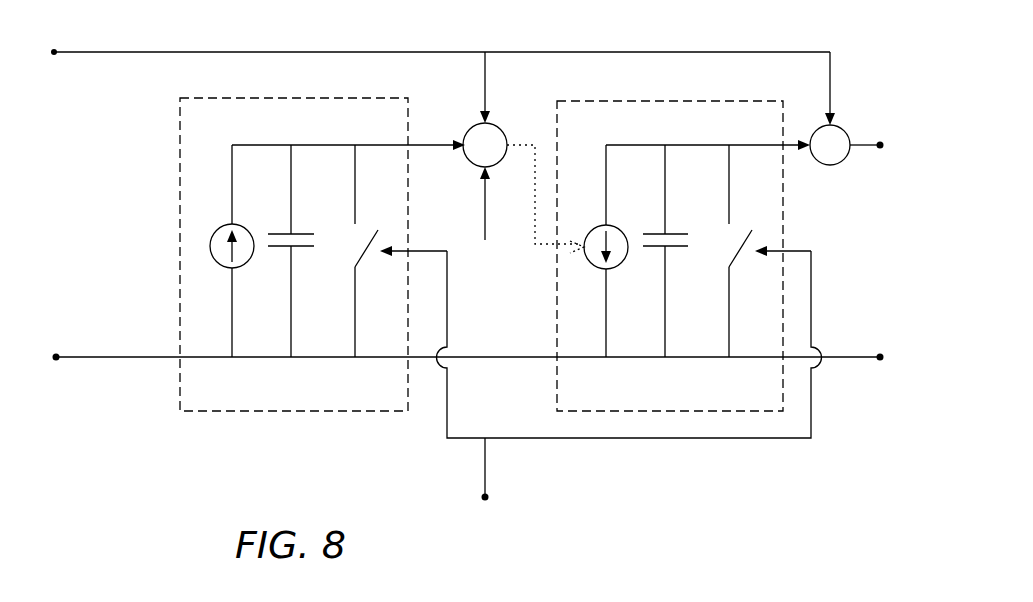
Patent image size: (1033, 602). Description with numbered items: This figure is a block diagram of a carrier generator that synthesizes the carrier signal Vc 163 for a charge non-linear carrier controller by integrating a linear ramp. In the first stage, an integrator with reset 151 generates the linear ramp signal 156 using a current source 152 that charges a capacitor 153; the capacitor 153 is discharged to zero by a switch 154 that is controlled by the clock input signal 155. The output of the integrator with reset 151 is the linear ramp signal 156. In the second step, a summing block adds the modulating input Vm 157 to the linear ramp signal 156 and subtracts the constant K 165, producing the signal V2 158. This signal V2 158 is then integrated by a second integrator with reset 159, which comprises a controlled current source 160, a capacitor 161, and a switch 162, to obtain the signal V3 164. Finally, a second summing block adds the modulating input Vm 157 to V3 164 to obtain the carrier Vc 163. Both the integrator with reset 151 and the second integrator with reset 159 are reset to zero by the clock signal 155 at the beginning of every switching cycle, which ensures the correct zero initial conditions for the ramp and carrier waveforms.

The integrator with reset 151 is at (272, 420).
The current source 152 is at (218, 262).
The capacitor 153 is at (282, 234).
The switch 154 is at (362, 258).
The clock input signal 155 is at (488, 496).
The linear ramp signal 156 is at (386, 145).
The modulating input Vm 157 is at (57, 52).
The signal V2 158 is at (517, 145).
The second integrator with reset 159 is at (655, 422).
The controlled current source 160 is at (590, 265).
The capacitor 161 is at (660, 234).
The switch 162 is at (736, 258).
The carrier signal Vc 163 is at (880, 143).
The signal V3 164 is at (770, 145).
The constant K 165 is at (485, 217).